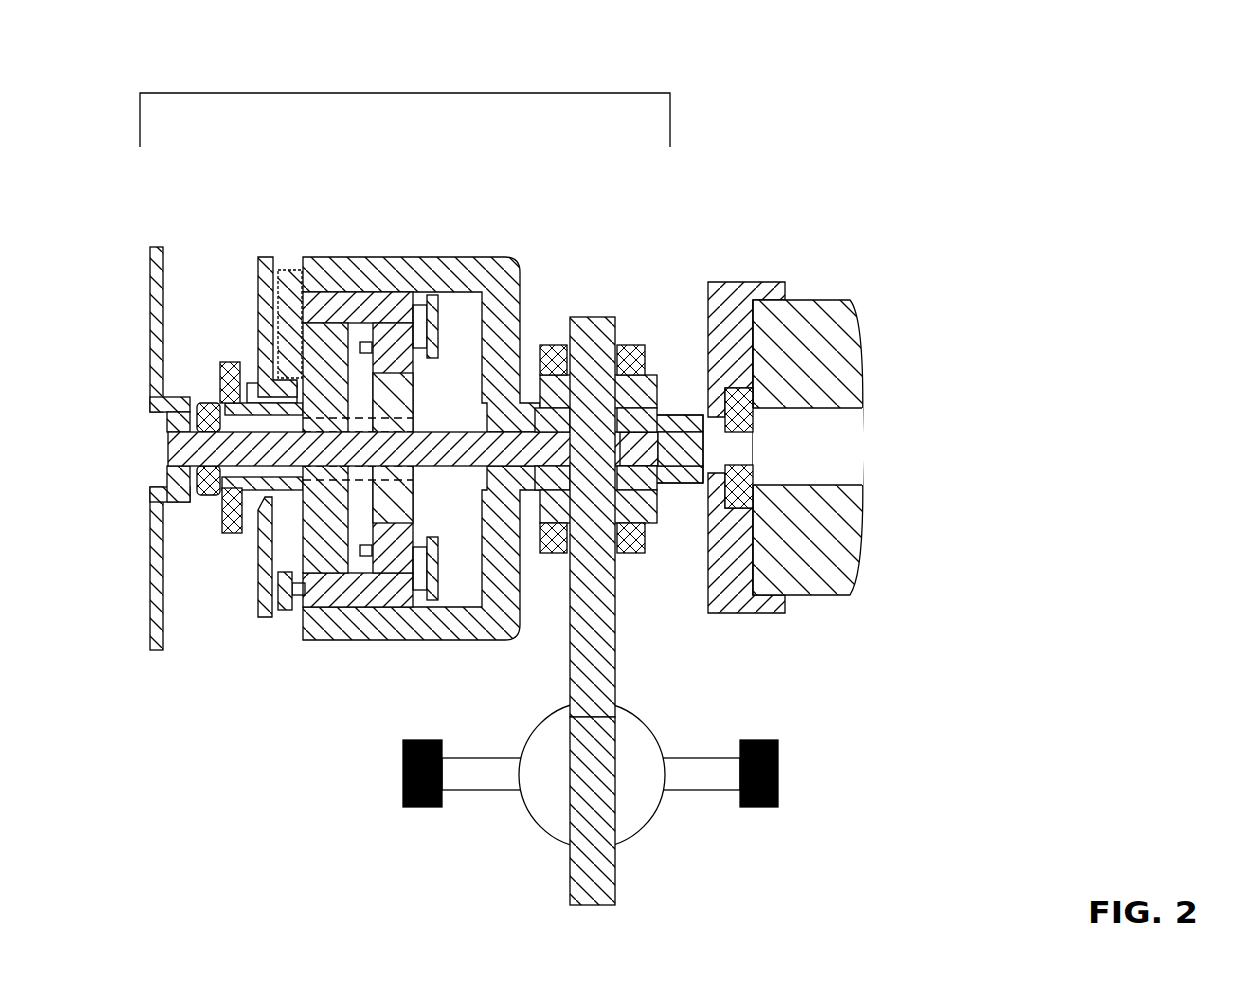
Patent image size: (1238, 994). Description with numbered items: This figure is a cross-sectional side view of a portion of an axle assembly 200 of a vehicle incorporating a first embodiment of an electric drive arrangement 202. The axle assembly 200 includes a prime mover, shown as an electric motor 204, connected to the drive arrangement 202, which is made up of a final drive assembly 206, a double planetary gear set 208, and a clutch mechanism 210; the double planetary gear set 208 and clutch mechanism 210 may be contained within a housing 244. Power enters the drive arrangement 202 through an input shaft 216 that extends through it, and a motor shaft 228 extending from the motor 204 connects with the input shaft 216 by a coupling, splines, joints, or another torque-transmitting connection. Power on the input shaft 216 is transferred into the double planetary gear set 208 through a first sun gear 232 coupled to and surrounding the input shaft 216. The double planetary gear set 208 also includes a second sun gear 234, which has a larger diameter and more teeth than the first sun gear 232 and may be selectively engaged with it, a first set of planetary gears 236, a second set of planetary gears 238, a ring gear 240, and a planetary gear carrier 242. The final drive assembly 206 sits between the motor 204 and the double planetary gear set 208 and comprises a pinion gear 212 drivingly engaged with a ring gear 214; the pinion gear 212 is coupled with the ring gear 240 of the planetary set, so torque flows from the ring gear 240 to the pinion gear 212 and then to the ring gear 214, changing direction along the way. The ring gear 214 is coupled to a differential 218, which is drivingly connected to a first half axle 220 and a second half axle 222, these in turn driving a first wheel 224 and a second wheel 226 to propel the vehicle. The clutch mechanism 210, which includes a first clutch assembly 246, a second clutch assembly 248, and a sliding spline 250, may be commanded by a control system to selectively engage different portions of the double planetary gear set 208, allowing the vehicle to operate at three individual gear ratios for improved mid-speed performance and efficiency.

The axle assembly 200 is at (1140, 48).
The electric drive arrangement 202 is at (558, 93).
The electric motor 204 is at (746, 248).
The final drive assembly 206 is at (594, 294).
The double planetary gear set 208 is at (388, 237).
The clutch mechanism 210 is at (240, 640).
The pinion gear 212 is at (605, 565).
The ring gear 214 is at (605, 882).
The input shaft 216 is at (522, 450).
The differential 218 is at (640, 732).
The first half axle 220 is at (483, 790).
The second half axle 222 is at (707, 790).
The first wheel 224 is at (403, 770).
The second wheel 226 is at (778, 766).
The motor shaft 228 is at (690, 452).
The first sun gear 232 is at (403, 413).
The second sun gear 234 is at (318, 358).
The first set of planetary gears 236 is at (383, 330).
The second set of planetary gears 238 is at (320, 293).
The ring gear 240 is at (446, 257).
The planetary gear carrier 242 is at (430, 606).
The housing 244 is at (150, 615).
The first clutch assembly 246 is at (233, 375).
The second clutch assembly 248 is at (245, 386).
The sliding spline 250 is at (200, 482).